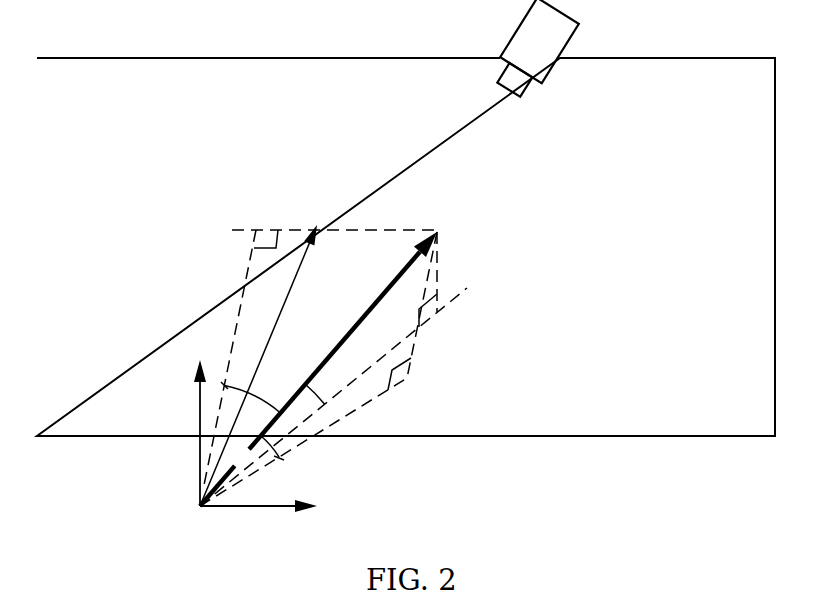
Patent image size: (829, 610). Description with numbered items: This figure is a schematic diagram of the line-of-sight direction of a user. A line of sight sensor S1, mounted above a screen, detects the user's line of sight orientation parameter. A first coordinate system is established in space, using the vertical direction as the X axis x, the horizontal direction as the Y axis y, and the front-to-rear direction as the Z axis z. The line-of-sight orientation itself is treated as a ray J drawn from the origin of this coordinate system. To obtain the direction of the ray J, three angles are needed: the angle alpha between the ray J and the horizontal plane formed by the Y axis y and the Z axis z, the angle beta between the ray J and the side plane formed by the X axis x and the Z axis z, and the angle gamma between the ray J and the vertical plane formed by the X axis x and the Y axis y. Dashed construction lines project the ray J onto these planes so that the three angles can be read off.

The line of sight sensor S1 is at (533, 51).
The ray J is at (318, 369).
The X axis x is at (188, 433).
The Y axis y is at (274, 506).
The Z axis z is at (258, 365).